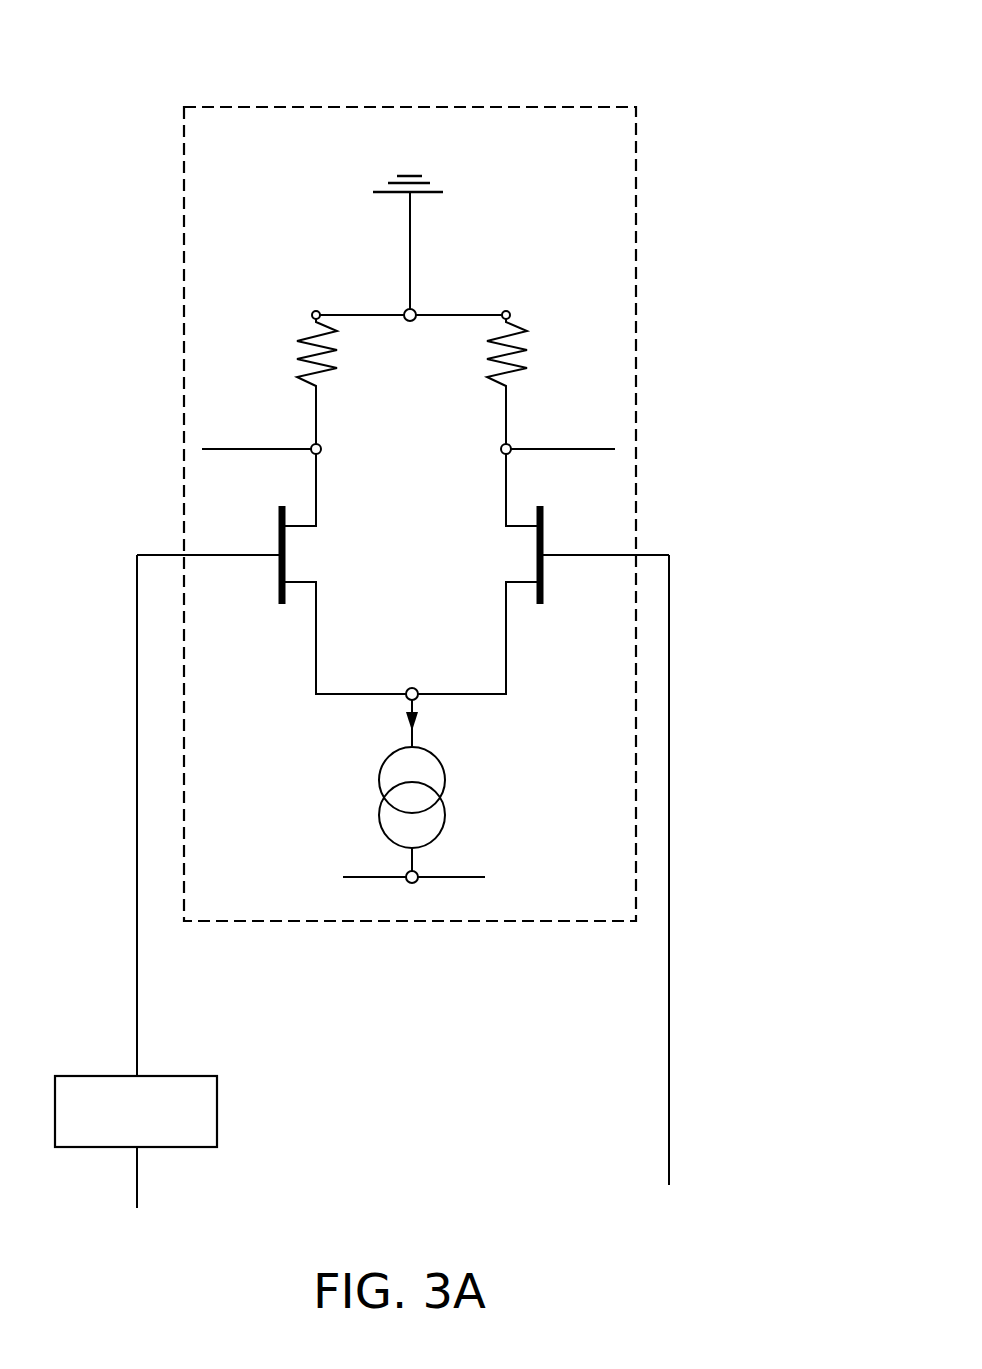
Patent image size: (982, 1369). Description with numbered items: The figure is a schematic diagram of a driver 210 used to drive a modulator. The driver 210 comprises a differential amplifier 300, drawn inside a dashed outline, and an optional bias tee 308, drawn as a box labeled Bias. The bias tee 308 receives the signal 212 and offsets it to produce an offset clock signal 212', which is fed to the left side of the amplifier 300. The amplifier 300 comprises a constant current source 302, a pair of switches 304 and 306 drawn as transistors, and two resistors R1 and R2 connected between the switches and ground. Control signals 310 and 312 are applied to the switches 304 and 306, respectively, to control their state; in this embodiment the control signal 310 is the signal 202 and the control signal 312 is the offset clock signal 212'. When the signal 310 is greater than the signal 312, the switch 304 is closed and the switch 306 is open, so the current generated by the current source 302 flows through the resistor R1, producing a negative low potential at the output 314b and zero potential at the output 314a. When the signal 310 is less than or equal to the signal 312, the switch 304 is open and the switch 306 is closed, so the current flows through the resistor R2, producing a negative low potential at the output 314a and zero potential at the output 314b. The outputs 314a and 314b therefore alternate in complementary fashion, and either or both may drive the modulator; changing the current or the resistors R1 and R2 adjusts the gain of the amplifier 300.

The driver 210 is at (81, 36).
The differential amplifier 300 is at (636, 242).
The constant current source 302 is at (427, 806).
The switch 304 is at (512, 529).
The switch 306 is at (313, 529).
The bias tee 308 is at (217, 1122).
The control signal 310 is at (589, 554).
The control signal 312 is at (222, 554).
The output signal 314a is at (558, 434).
The output signal 314b is at (261, 434).
The signal 212 is at (140, 1196).
The offset clock signal 212' is at (196, 815).
The signal 202 is at (671, 889).
The resistor R1 is at (337, 381).
The resistor R2 is at (528, 381).